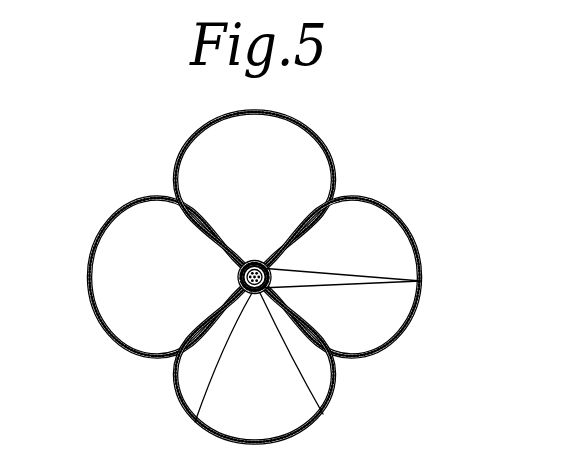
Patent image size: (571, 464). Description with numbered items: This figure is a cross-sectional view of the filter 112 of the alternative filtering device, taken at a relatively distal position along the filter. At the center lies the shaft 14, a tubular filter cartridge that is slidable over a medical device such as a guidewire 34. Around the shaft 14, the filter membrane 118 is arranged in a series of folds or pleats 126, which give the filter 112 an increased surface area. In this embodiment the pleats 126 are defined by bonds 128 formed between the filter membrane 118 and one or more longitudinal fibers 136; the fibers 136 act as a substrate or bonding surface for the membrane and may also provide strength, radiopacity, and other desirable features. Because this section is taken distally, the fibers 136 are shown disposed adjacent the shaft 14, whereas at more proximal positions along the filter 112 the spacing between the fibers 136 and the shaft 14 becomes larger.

The filter 112 is at (419, 157).
The filter membrane 118 is at (97, 240).
The pleats 126 is at (162, 183).
The bonds 128 is at (234, 237).
The longitudinal fibers 136 is at (405, 282).
The shaft 14 is at (195, 422).
The guidewire 34 is at (323, 414).